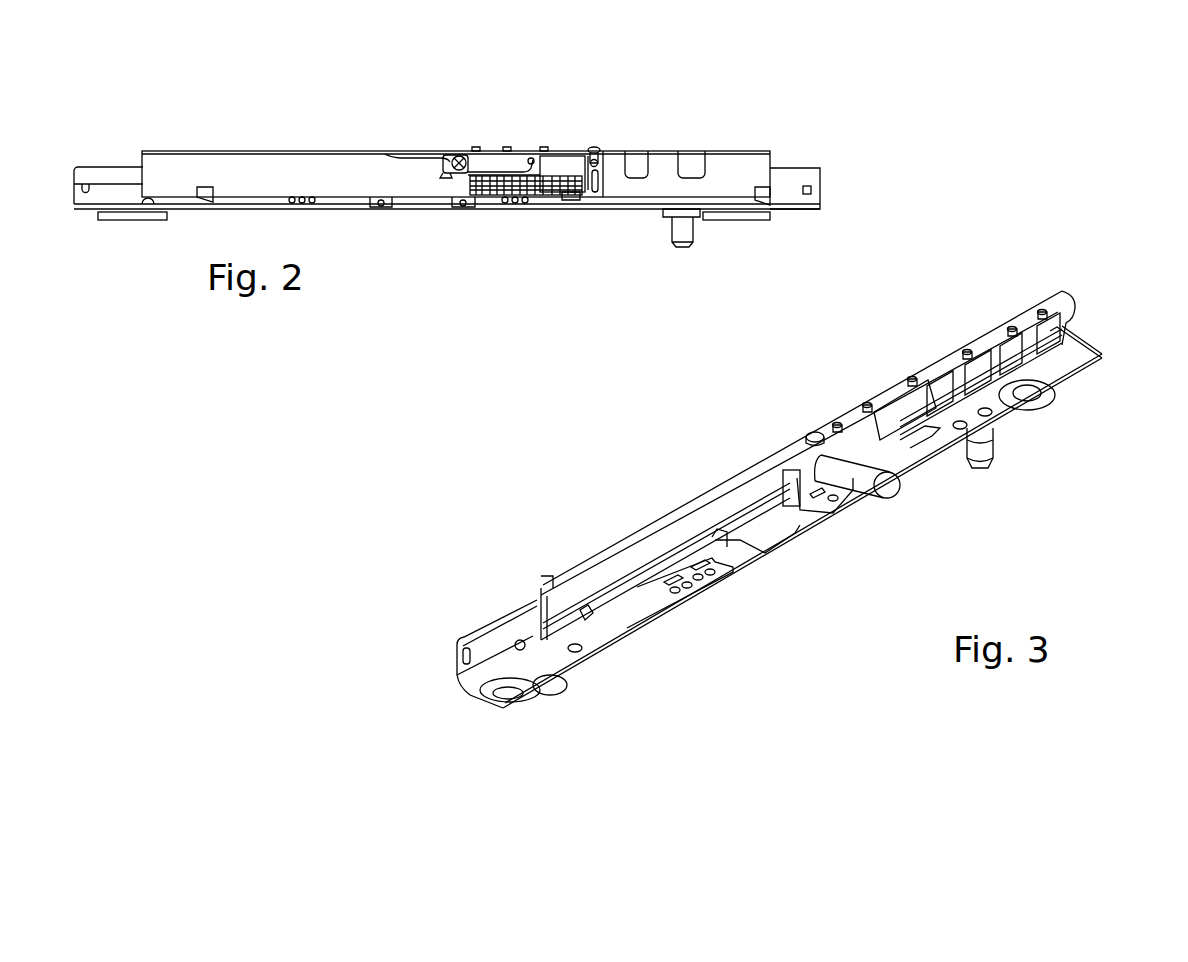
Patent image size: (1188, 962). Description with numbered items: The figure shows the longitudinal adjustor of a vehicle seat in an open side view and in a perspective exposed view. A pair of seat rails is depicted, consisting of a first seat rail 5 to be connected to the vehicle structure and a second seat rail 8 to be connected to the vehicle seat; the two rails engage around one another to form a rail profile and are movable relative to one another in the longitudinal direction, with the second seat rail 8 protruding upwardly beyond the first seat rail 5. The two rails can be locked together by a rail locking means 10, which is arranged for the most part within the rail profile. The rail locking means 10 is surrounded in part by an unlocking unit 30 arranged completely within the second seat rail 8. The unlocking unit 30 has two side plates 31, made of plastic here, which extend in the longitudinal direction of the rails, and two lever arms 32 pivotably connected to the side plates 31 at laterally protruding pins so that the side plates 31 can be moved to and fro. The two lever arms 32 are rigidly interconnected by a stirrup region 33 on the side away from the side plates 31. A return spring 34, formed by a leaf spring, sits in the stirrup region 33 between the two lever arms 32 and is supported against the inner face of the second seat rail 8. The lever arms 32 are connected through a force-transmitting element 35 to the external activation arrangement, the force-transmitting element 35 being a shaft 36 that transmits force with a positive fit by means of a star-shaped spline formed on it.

In FIG. 2, the first seat rail 5 is at (114, 177).
In FIG. 2, the second seat rail 8 is at (248, 168).
In FIG. 3, the second seat rail 8 is at (670, 518).
In FIG. 2, the rail locking means 10 is at (572, 205).
In FIG. 2, the unlocking unit 30 is at (525, 172).
In FIG. 3, the unlocking unit 30 is at (897, 450).
In FIG. 2, the side plates 31 is at (560, 167).
In FIG. 3, the side plates 31 is at (893, 427).
In FIG. 2, the lever arms 32 is at (482, 167).
In FIG. 3, the lever arms 32 is at (862, 438).
In FIG. 2, the stirrup region 33 is at (448, 173).
In FIG. 3, the stirrup region 33 is at (795, 478).
In FIG. 2, the return spring 34 is at (410, 153).
In FIG. 3, the force-transmitting element 35 is at (860, 490).
In FIG. 2, the shaft 36 is at (459, 155).